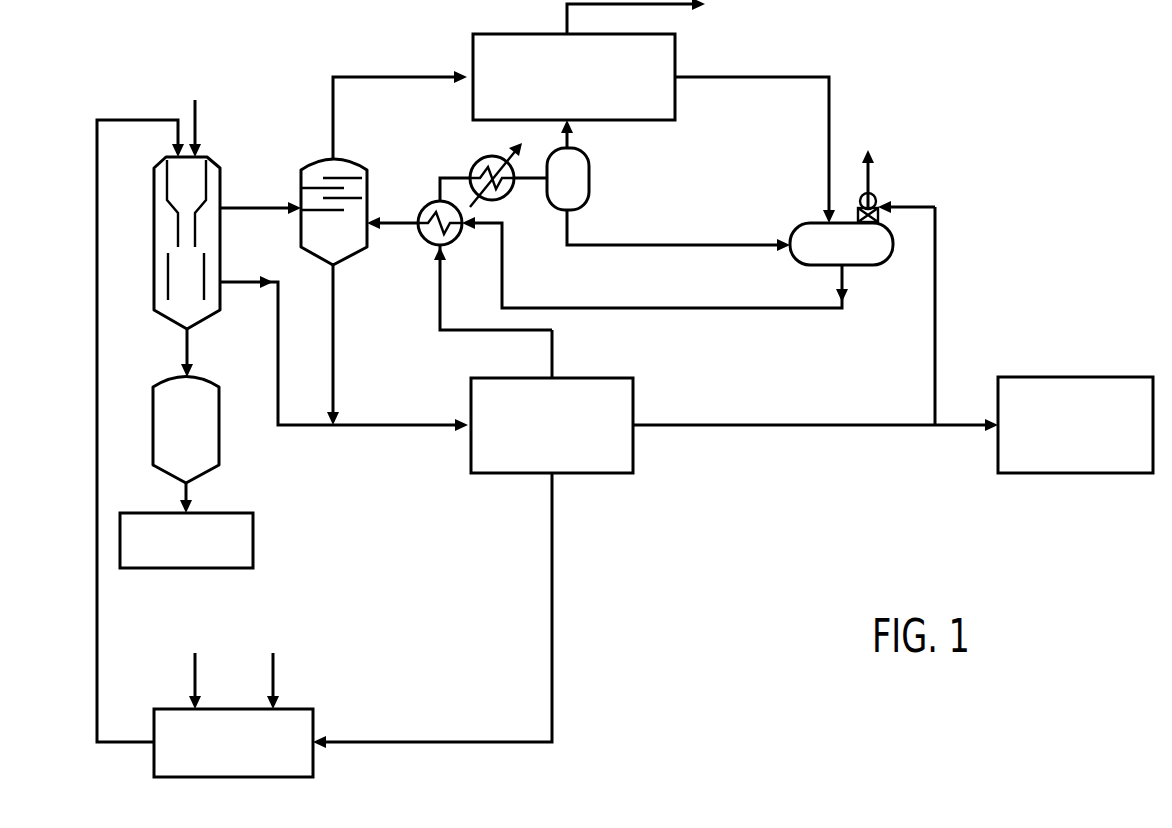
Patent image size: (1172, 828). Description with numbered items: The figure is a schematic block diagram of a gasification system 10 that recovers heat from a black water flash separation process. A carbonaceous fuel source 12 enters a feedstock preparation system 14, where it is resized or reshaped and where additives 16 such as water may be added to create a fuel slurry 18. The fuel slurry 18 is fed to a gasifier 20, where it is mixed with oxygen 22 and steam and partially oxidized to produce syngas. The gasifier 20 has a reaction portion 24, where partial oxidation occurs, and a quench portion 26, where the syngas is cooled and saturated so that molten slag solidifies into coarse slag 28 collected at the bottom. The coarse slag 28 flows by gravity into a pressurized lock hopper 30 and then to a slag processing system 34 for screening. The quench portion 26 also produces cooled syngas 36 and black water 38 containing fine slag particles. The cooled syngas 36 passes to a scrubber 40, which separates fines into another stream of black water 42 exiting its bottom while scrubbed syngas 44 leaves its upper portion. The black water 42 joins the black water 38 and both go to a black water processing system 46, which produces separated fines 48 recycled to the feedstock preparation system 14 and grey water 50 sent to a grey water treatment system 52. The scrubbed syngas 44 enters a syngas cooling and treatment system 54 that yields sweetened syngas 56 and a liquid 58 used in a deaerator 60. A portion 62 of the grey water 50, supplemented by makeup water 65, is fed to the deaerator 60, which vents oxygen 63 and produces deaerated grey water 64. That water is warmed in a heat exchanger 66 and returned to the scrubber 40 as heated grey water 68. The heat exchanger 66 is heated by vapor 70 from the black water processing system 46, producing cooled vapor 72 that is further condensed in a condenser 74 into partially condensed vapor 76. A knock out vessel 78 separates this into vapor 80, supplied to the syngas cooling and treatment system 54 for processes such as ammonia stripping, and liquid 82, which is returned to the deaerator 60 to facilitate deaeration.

The gasification system 10 is at (1047, 99).
The carbonaceous fuel source 12 is at (194, 675).
The feedstock preparation system 14 is at (154, 760).
The additives 16 is at (274, 675).
The fuel slurry 18 is at (138, 120).
The gasifier 20 is at (163, 161).
The oxygen 22 is at (197, 122).
The reaction portion 24 is at (158, 189).
The quench portion 26 is at (158, 283).
The coarse slag 28 is at (191, 344).
The pressurized lock hopper 30 is at (170, 380).
The slag processing system 34 is at (253, 548).
The cooled syngas 36 is at (253, 207).
The black water 38 is at (242, 282).
The scrubber 40 is at (318, 162).
The black water 42 is at (336, 305).
The scrubbed syngas 44 is at (336, 122).
The black water processing system 46 is at (636, 404).
The separated fines 48 is at (554, 608).
The grey water 50 is at (808, 423).
The grey water treatment system 52 is at (1075, 377).
The syngas cooling and treatment system 54 is at (493, 34).
The sweetened syngas 56 is at (677, 8).
The liquid 58 is at (752, 77).
The deaerator 60 is at (805, 222).
The portion of grey water 62 is at (937, 318).
The oxygen 63 is at (870, 182).
The deaerated grey water 64 is at (845, 280).
The makeup water 65 is at (946, 250).
The heat exchanger 66 is at (456, 245).
The heated grey water 68 is at (398, 228).
The vapor 70 is at (555, 354).
The cooled vapor 72 is at (438, 191).
The condenser 74 is at (484, 157).
The partially condensed vapor 76 is at (530, 180).
The knock out vessel 78 is at (590, 178).
The vapor 80 is at (570, 140).
The liquid 82 is at (622, 245).